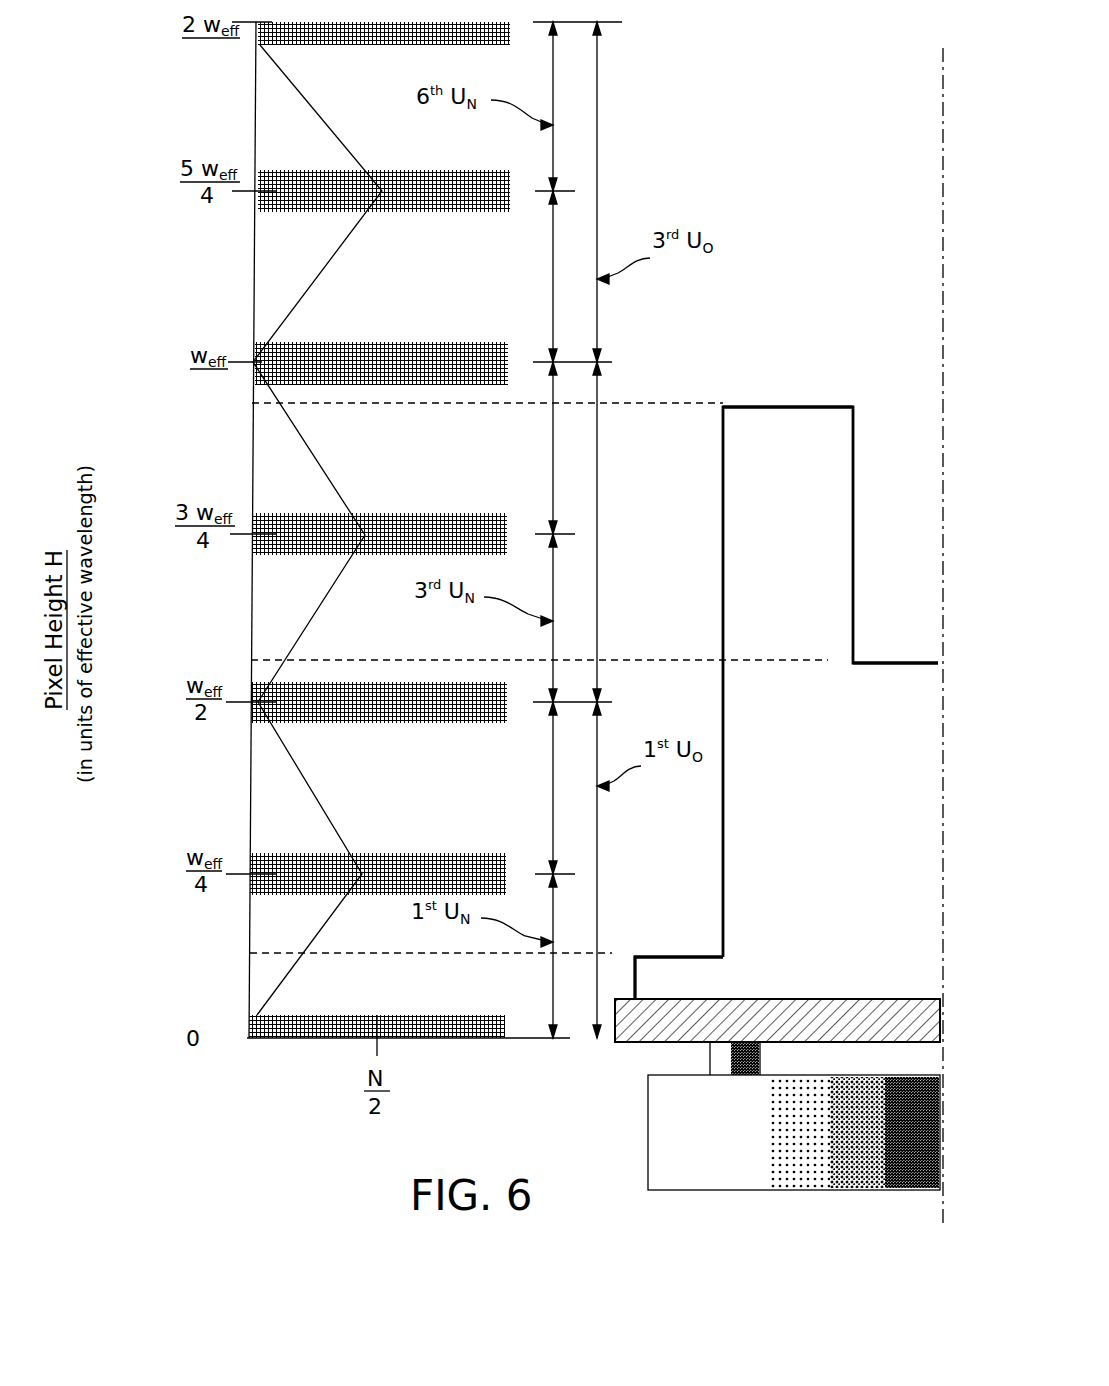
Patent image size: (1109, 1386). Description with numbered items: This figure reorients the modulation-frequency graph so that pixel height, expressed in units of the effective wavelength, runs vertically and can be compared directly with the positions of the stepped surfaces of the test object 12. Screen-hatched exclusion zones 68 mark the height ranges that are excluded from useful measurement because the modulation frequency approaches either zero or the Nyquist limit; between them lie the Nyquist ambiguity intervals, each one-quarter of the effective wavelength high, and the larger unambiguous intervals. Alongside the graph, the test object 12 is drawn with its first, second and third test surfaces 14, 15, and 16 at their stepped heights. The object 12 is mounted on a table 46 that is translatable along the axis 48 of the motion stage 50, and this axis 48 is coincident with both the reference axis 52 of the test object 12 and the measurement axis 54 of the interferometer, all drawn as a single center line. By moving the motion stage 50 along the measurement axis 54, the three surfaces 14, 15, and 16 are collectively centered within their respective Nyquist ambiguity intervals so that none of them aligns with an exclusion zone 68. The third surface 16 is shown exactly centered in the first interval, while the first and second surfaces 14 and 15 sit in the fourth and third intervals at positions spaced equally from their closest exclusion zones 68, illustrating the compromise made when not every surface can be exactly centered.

The test object 12 is at (866, 861).
The first test surface 14 is at (790, 408).
The second test surface 15 is at (884, 663).
The third test surface 16 is at (676, 957).
The table 46 is at (645, 1044).
The axis 48 is at (896, 636).
The reference axis 52 is at (896, 636).
The measurement axis 54 is at (940, 256).
The motion stage 50 is at (712, 1146).
The exclusion zones 68 is at (463, 200).